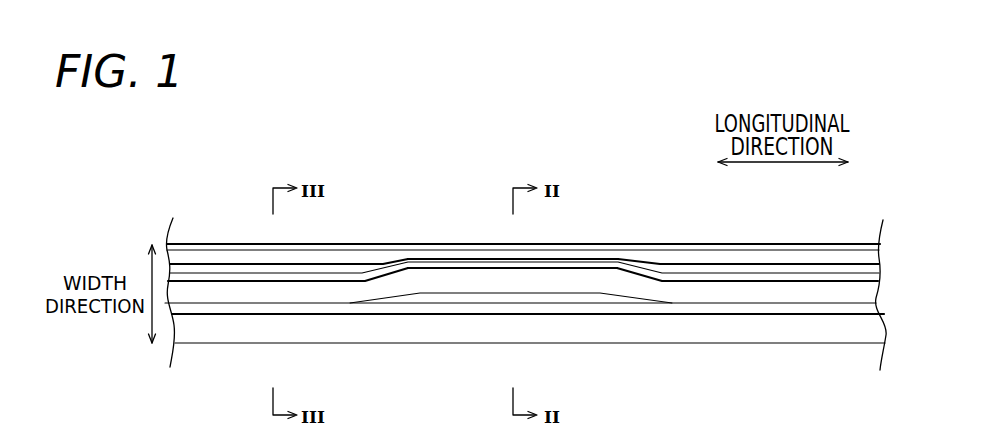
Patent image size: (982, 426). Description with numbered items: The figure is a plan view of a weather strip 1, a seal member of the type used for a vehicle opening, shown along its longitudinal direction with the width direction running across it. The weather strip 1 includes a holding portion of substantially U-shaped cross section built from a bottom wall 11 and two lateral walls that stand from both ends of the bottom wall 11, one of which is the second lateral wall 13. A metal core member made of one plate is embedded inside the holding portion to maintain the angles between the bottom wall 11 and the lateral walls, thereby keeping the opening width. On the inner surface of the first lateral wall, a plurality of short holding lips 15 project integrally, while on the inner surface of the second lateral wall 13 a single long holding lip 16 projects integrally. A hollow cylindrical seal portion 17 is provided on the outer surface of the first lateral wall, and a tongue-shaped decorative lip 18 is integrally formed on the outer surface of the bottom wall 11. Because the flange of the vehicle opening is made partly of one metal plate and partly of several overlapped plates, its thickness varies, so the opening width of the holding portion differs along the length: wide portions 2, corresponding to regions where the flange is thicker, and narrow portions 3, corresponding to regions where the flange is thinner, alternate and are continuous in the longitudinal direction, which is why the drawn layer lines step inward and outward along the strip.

The weather strip 1 is at (427, 197).
The wide portions 2 is at (588, 282).
The narrow portions 3 is at (225, 292).
The bottom wall 11 is at (460, 297).
The second lateral wall 13 is at (813, 278).
The short holding lips 15 is at (819, 310).
The long holding lip 16 is at (780, 293).
The hollow cylindrical seal portion 17 is at (852, 328).
The decorative lip 18 is at (843, 258).